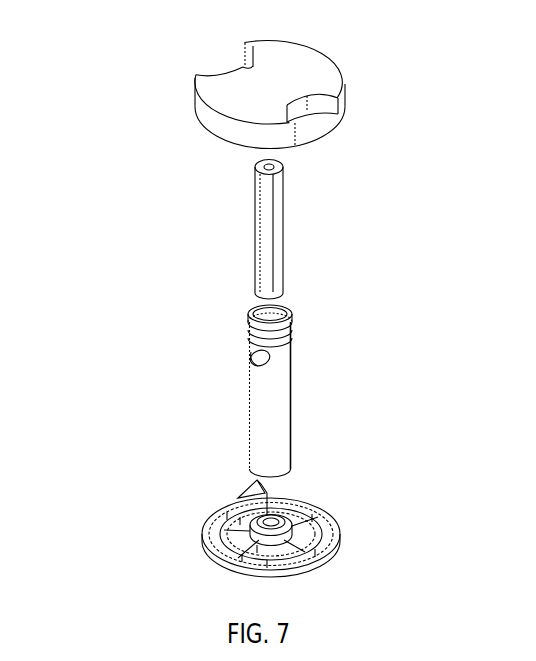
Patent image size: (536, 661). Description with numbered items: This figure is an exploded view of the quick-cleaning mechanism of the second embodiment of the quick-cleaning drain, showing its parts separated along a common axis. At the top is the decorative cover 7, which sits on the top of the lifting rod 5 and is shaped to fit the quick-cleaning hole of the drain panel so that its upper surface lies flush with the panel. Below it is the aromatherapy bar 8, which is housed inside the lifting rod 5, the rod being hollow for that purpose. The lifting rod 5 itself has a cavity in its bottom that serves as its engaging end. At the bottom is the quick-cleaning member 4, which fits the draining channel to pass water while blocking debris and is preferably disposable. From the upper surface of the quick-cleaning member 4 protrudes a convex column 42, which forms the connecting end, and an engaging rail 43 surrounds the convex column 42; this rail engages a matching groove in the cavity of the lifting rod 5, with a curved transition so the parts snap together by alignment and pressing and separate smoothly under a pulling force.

The decorative cover 7 is at (252, 92).
The aromatherapy bar 8 is at (270, 222).
The lifting rod 5 is at (268, 403).
The quick-cleaning member 4 is at (263, 502).
The engaging rail 43 is at (288, 525).
The convex column 42 is at (278, 538).